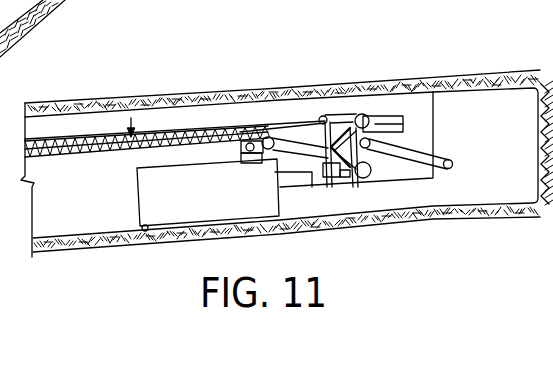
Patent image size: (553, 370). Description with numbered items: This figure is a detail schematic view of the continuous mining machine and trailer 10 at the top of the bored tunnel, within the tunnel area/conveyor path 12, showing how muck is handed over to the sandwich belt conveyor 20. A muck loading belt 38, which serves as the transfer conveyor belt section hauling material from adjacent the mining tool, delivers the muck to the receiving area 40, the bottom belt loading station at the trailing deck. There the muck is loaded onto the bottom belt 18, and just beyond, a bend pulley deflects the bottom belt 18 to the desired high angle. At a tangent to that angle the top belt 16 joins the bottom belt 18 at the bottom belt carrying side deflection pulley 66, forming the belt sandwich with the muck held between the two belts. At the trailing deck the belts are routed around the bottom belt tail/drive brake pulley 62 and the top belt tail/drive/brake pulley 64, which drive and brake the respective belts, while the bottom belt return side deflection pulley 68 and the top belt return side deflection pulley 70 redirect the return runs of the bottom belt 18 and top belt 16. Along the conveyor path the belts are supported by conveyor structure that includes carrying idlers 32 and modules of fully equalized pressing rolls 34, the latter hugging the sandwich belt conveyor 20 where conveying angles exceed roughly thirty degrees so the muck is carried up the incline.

The continuous mining machine and trailer 10 is at (141, 199).
The tunnel area/conveyor path 12 is at (115, 252).
The top belt 16 is at (222, 130).
The bottom belt 18 is at (175, 150).
The sandwich belt conveyor 20 is at (131, 118).
The carrying idlers 32 is at (68, 148).
The modules of fully equalized pressing rolls 34 is at (103, 138).
The muck loading belt 38 is at (423, 152).
The receiving area / bottom belt loading station 40 is at (311, 124).
The bottom belt tail/drive brake pulley 62 is at (372, 171).
The top belt tail/drive/brake pulley 64 is at (362, 114).
The bottom belt carrying side deflection pulley 66 is at (273, 152).
The bottom belt return side deflection pulley 68 is at (252, 137).
The top belt return side deflection pulley 70 is at (322, 116).